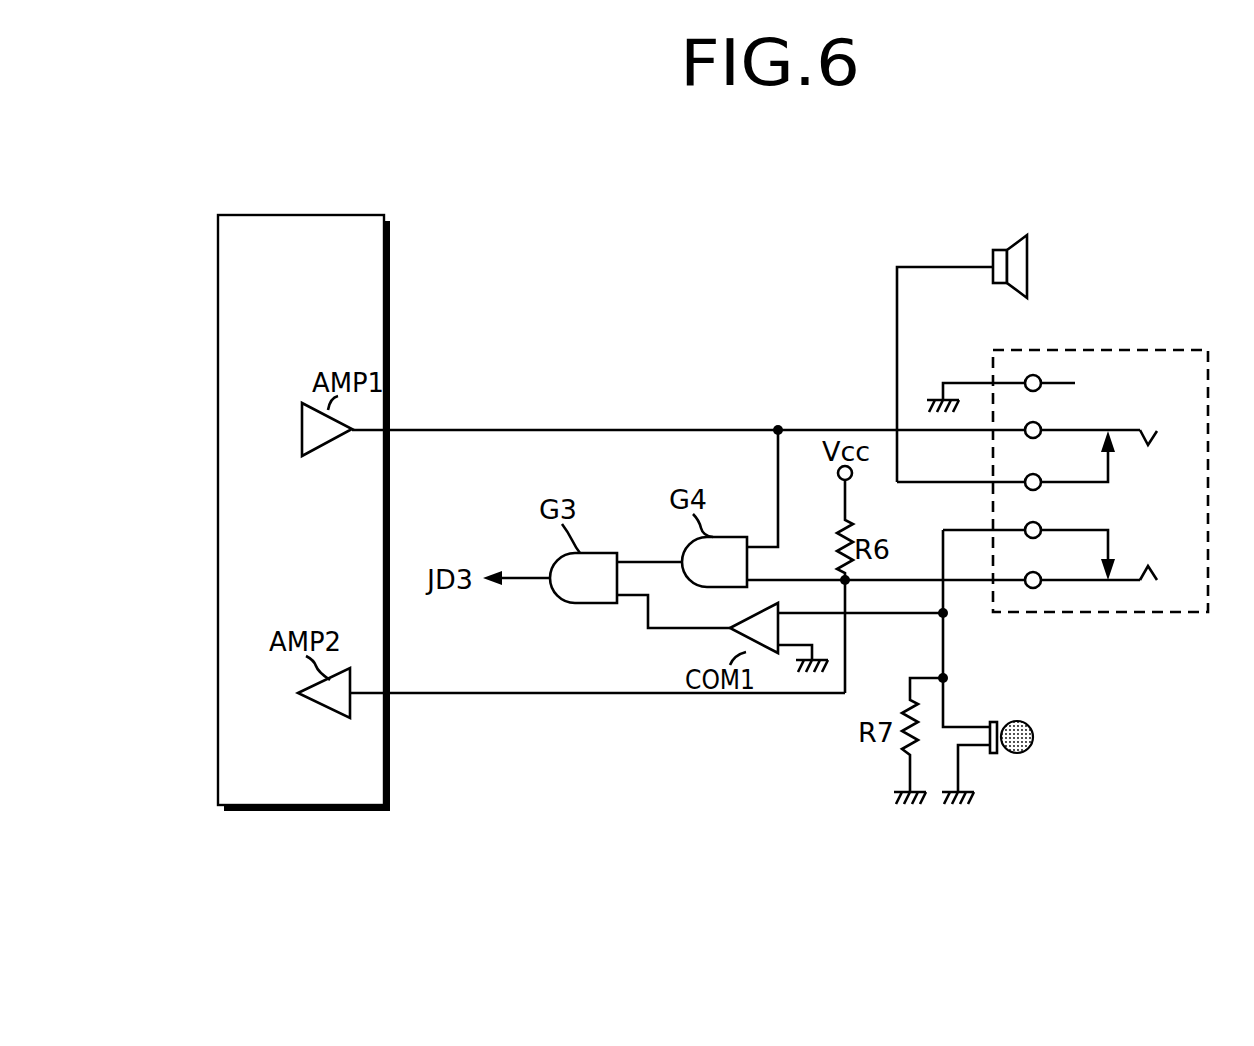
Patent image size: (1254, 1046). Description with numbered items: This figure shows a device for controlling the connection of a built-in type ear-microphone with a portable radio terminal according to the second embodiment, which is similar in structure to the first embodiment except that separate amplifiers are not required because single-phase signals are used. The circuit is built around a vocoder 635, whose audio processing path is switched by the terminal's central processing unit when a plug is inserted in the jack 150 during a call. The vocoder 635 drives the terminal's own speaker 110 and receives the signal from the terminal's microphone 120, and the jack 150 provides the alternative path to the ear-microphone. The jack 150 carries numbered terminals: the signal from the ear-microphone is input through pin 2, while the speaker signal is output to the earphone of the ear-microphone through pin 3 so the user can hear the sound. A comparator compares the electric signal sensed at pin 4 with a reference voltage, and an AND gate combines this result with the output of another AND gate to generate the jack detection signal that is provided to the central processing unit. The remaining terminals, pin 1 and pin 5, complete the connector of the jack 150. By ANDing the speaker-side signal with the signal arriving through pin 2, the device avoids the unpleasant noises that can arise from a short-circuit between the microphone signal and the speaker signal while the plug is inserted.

The vocoder 635 is at (301, 215).
The speaker 110 is at (1030, 268).
The microphone 120 is at (1028, 754).
The ear jack 150 is at (1052, 449).
The ear jack terminal 1 is at (1001, 382).
The pin 2 of the jack 2 is at (1091, 569).
The pin 3 of the jack 3 is at (1091, 422).
The pin 4 of the jack 4 is at (1029, 540).
The ear jack terminal 5 is at (1006, 460).